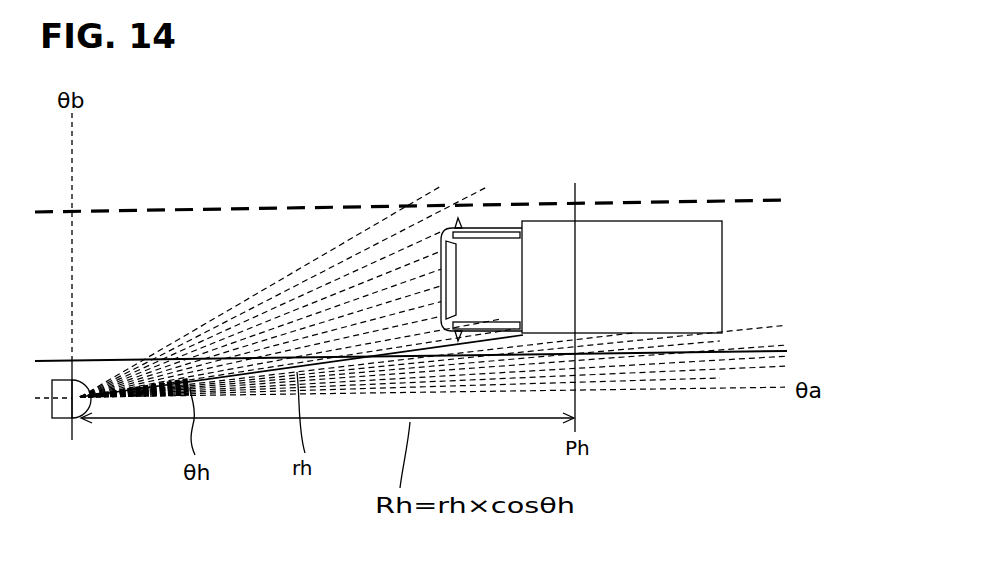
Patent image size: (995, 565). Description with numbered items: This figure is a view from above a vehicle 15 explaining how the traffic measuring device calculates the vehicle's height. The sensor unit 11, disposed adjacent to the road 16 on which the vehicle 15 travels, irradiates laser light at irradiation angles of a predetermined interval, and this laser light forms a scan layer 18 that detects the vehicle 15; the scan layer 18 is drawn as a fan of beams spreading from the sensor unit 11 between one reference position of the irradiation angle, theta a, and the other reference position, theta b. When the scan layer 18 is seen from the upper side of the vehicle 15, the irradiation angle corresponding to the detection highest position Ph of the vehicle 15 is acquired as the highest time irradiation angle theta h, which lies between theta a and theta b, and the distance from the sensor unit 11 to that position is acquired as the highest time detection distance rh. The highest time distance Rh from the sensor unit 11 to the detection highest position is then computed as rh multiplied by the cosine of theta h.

The sensor unit 11 is at (60, 421).
The vehicle 15 is at (617, 238).
The road 16 is at (770, 220).
The scan layer 18 is at (275, 242).